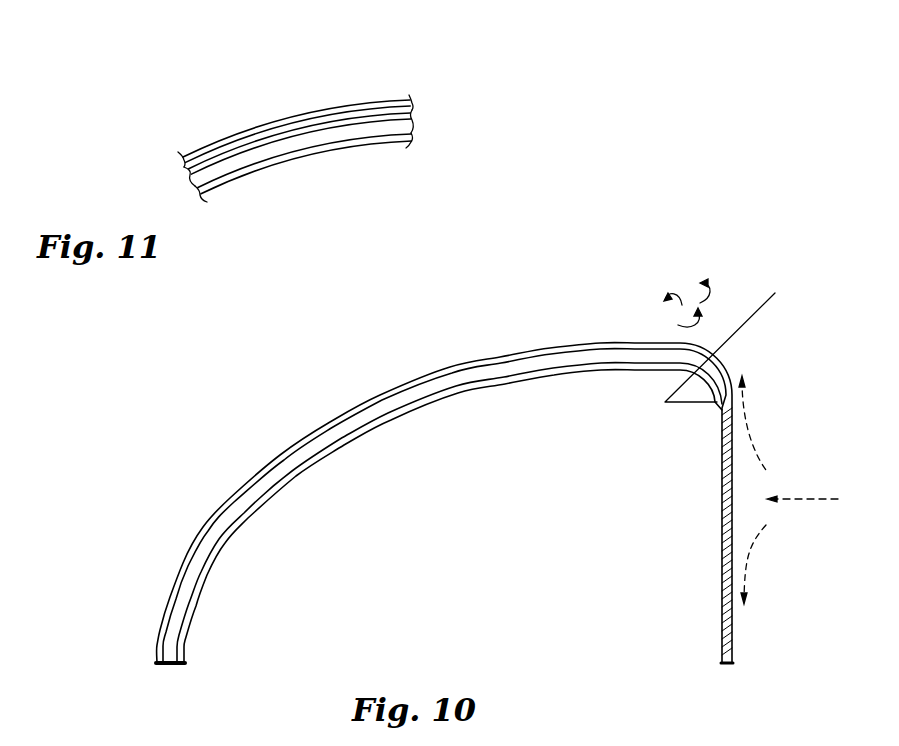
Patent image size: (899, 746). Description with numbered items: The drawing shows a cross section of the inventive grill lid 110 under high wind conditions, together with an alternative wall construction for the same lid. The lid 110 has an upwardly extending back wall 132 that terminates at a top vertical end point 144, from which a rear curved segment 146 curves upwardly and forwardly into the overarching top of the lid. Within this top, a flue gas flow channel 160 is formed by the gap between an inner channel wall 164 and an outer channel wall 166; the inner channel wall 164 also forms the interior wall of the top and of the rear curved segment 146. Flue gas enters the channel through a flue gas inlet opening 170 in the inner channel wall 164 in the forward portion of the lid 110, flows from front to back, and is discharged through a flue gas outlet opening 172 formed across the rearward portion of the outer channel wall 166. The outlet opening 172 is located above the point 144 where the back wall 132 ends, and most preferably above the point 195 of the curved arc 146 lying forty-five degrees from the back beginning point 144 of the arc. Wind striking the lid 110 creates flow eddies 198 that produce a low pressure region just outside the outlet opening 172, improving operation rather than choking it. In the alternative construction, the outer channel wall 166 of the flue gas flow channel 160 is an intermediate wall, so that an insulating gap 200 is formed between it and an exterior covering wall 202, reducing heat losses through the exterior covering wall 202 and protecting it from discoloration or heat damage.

In FIG. 11, the lid 110 is at (252, 115).
In FIG. 10, the lid 110 is at (295, 426).
In FIG. 10, the back wall 132 is at (731, 513).
In FIG. 10, the top vertical end point 144 is at (732, 402).
In FIG. 10, the rear curved segment 146 is at (723, 368).
In FIG. 11, the flue gas flow channel 160 is at (340, 136).
In FIG. 11, the inner channel wall 164 is at (243, 177).
In FIG. 11, the outer channel wall 166 is at (347, 105).
In FIG. 10, the flue gas inlet opening 170 is at (210, 575).
In FIG. 10, the flue gas outlet opening 172 is at (690, 342).
In FIG. 10, the point of the curved arc 195 is at (708, 357).
In FIG. 10, the flow eddies 198 is at (682, 312).
In FIG. 11, the insulating gap 200 is at (291, 128).
In FIG. 11, the exterior covering wall 202 is at (227, 137).